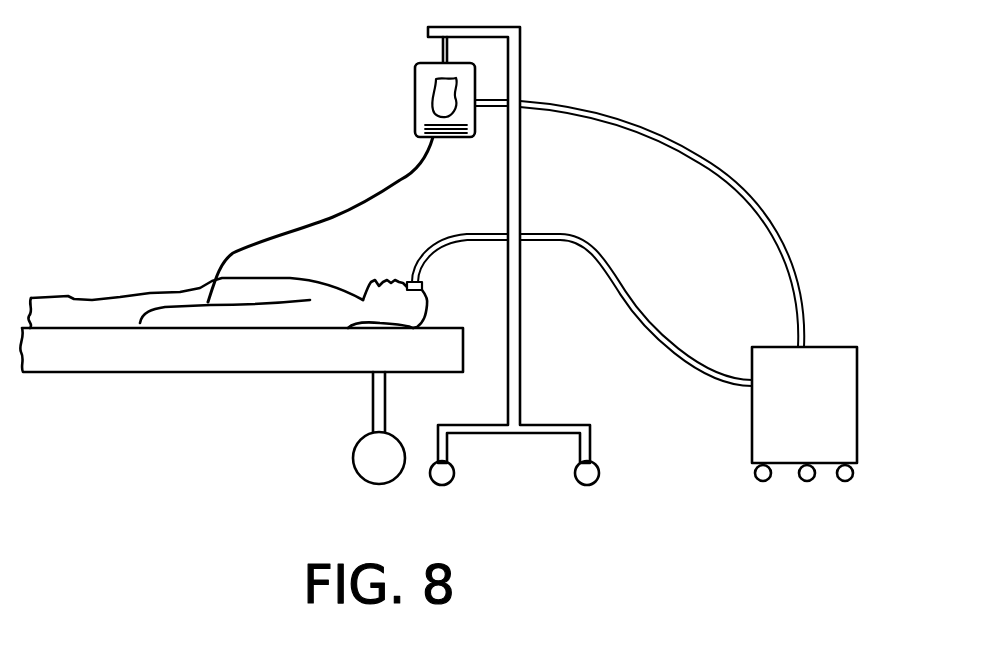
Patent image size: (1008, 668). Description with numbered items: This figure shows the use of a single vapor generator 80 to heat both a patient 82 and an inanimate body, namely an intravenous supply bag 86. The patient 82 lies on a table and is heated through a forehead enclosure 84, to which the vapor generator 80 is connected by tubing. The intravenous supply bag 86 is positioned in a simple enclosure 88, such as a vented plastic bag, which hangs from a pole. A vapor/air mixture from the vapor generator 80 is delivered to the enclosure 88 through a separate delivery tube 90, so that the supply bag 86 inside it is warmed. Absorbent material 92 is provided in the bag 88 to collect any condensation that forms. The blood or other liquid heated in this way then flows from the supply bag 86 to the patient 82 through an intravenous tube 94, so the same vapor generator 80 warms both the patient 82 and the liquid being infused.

The vapor generator 80 is at (833, 347).
The patient 82 is at (115, 294).
The forehead enclosure 84 is at (423, 287).
The intravenous supply bag 86 is at (445, 93).
The enclosure 88 is at (425, 63).
The delivery tube 90 is at (667, 138).
The absorbent material 92 is at (418, 133).
The intravenous tube 94 is at (315, 220).